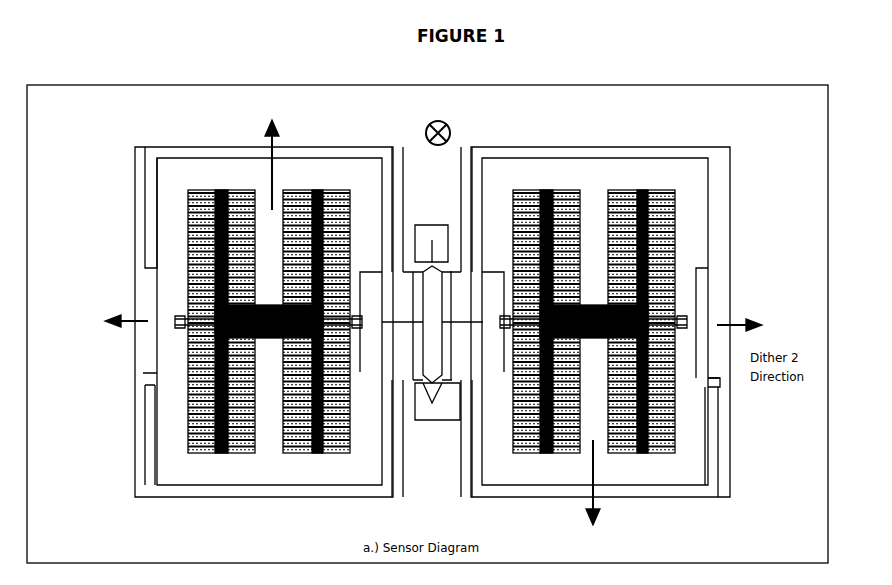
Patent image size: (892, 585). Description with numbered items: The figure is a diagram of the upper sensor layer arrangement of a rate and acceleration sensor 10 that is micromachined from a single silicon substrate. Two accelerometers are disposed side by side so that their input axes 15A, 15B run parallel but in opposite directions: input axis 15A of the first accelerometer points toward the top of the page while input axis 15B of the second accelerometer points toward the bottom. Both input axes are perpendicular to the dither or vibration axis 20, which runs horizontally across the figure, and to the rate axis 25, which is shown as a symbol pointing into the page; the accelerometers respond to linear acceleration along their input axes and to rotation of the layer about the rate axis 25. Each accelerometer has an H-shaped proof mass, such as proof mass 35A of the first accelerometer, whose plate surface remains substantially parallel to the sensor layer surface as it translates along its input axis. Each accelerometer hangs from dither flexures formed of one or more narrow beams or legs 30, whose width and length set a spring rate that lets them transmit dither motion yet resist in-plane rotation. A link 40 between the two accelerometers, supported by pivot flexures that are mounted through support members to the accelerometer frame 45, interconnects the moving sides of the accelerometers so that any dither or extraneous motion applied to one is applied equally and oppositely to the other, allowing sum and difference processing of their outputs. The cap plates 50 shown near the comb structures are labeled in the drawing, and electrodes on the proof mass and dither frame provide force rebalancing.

The rate and acceleration sensor 10 is at (660, 76).
The input axis of the first accelerometer 15A is at (234, 150).
The input axis of the second accelerometer 15B is at (576, 528).
The dither axis 20 is at (97, 331).
The rate axis 25 is at (462, 128).
The narrow beams 30 is at (90, 449).
The proof mass 35A is at (310, 522).
The link 40 is at (446, 356).
The accelerometer frame 45 is at (752, 146).
The cap plates 50 is at (190, 457).